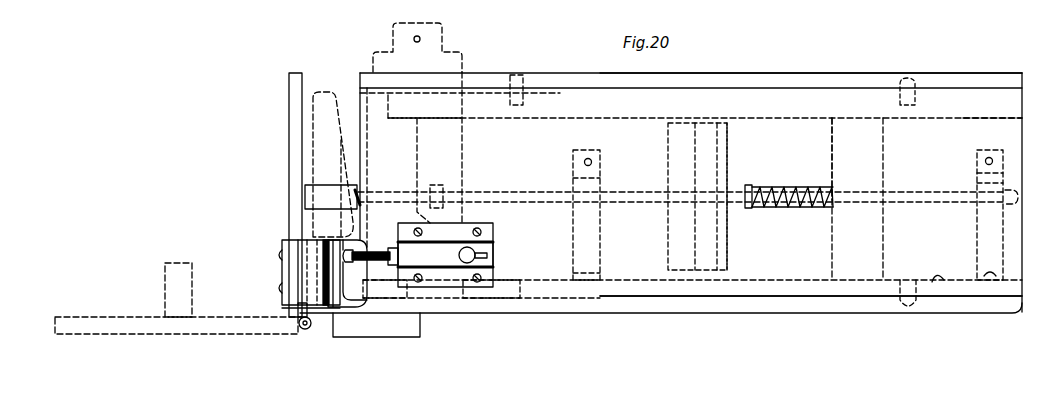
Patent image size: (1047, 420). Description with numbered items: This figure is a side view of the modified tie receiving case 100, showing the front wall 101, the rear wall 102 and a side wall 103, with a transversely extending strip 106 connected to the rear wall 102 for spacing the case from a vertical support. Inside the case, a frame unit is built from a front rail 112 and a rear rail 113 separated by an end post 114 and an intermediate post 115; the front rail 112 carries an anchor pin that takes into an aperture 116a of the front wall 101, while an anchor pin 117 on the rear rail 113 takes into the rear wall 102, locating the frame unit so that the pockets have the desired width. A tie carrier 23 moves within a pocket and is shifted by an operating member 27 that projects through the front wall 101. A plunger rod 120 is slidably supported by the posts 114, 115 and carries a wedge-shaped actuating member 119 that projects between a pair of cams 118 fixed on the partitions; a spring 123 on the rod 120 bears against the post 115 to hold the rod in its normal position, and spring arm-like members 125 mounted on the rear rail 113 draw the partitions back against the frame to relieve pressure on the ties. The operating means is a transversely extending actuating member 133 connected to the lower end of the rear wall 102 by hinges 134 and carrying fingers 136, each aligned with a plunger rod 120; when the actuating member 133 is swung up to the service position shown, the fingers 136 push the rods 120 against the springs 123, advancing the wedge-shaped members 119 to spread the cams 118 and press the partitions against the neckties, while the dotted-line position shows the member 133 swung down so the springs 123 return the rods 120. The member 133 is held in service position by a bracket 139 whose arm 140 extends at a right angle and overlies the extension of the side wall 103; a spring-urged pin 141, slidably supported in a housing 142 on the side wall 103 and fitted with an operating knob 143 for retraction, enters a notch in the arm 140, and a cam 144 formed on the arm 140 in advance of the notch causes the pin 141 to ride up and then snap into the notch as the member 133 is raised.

The carrier 23 is at (462, 100).
The operating member 27 is at (445, 50).
The tie receiving case 100 is at (661, 183).
The front wall 101 is at (777, 82).
The rear wall 102 is at (781, 308).
The side wall 103 is at (860, 98).
The transversely extending strip 106 is at (334, 334).
The front rail 112 is at (963, 125).
The rear rail 113 is at (943, 282).
The end post 114 is at (362, 113).
The intermediate post 115 is at (829, 128).
The aperture 116a is at (908, 80).
The anchor pin 117 is at (903, 283).
The cam 118 is at (727, 250).
The actuating member 119 is at (668, 270).
The plunger rod 120 is at (963, 203).
The spring 123 is at (807, 208).
The arm-like member 125 is at (608, 268).
The actuating member 133 is at (297, 72).
The hinge 134 is at (303, 331).
The finger 136 is at (328, 187).
The bracket 139 is at (283, 245).
The arm 140 is at (298, 275).
The pin 141 is at (382, 262).
The housing 142 is at (455, 284).
The operating knob 143 is at (494, 250).
The cam 144 is at (392, 283).